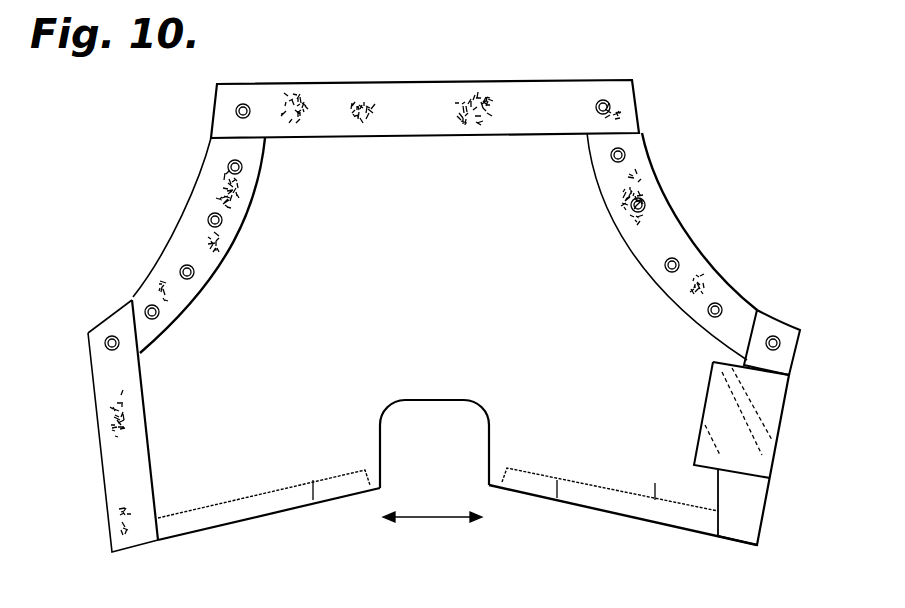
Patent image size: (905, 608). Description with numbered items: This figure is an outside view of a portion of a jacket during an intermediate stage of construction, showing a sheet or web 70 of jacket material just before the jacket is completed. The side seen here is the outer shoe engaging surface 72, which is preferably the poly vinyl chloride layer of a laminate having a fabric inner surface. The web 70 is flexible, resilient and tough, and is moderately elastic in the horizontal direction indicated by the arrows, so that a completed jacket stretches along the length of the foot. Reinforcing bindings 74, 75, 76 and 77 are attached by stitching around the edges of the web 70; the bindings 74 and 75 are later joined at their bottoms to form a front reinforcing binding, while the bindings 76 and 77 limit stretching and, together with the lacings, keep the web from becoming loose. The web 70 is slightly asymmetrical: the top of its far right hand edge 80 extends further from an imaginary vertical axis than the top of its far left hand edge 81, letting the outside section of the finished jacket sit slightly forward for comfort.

The web of jacket material 70 is at (716, 254).
The outer shoe engaging surface 72 is at (655, 484).
The reinforcing binding 74 is at (130, 489).
The reinforcing binding 75 is at (755, 500).
The reinforcing binding 76 is at (190, 241).
The reinforcing binding 77 is at (395, 102).
The far right hand edge 80 is at (794, 350).
The far left hand edge 81 is at (88, 333).